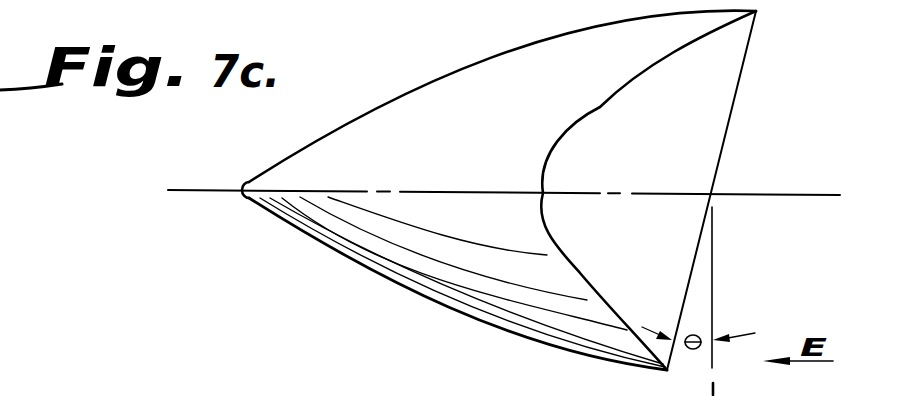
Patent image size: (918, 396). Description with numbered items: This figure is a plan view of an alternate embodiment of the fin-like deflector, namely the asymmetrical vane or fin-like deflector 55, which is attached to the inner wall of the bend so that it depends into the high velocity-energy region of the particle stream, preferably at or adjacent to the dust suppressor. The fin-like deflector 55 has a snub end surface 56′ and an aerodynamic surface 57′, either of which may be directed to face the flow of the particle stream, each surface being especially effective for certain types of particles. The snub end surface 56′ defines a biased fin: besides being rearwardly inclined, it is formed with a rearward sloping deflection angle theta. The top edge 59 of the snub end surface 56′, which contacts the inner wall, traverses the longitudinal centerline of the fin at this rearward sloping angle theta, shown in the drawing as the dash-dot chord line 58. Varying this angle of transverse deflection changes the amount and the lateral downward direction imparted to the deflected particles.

The asymmetrical vane or fin-like deflector 55 is at (134, 184).
The snub end surface 56′ is at (671, 276).
The aerodynamic surface 57′ is at (479, 330).
The chord axis 58 is at (785, 196).
The top edge 59 is at (738, 90).